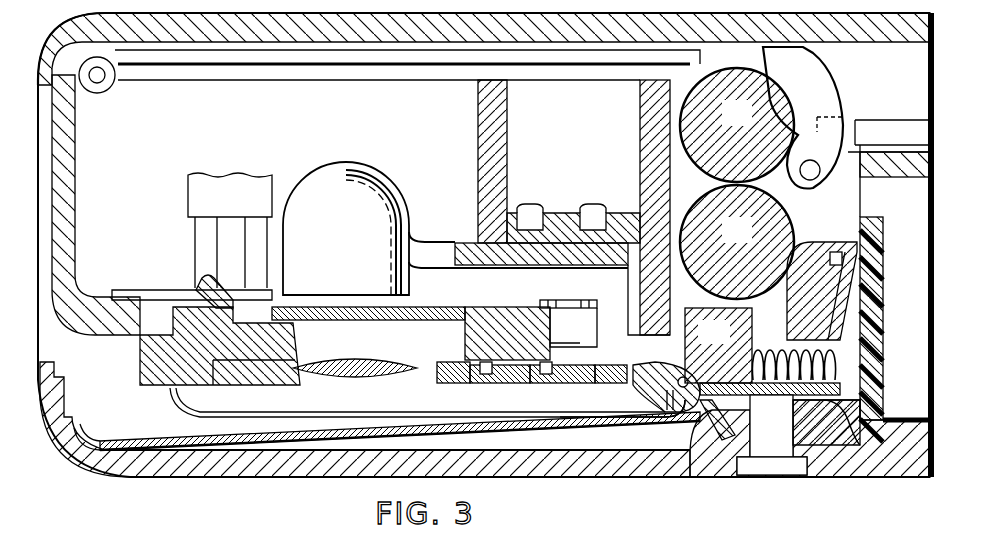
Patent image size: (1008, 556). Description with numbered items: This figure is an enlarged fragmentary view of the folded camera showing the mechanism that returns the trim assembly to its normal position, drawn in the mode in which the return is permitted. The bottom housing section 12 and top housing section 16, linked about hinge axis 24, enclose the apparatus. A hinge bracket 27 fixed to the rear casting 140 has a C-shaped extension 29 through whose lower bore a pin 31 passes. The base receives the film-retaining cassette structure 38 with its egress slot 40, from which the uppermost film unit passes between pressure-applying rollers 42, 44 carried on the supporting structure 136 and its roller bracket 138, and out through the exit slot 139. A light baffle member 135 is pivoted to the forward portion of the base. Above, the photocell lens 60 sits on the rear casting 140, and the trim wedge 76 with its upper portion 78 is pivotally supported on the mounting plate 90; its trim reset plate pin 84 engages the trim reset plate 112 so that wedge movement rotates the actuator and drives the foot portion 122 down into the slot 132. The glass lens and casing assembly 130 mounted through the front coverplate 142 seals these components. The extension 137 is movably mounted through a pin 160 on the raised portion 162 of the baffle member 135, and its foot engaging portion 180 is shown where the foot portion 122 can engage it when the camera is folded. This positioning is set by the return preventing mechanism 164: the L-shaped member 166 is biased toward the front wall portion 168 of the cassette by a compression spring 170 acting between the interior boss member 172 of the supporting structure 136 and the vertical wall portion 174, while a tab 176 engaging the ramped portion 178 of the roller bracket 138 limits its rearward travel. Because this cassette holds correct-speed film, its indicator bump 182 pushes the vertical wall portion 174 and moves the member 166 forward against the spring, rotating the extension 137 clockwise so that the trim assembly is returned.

The bottom housing section 12 is at (875, 467).
The top housing section 16 is at (205, 35).
The hinge axis 24 is at (101, 81).
The hinge bracket 27 is at (383, 58).
The C-shaped extension 29 is at (828, 92).
The pin 31 is at (812, 160).
The film-retaining cassette structure 38 is at (918, 437).
The egress opening or slot 40 is at (870, 190).
The pressure-applying roller 42 is at (725, 126).
The pressure-applying roller 44 is at (725, 243).
The photocell lens 60 is at (335, 180).
The trim wedge 76 is at (503, 320).
The upper portion of trim wedge 78 is at (420, 318).
The trim reset plate pin 84 is at (500, 383).
The mounting plate 90 is at (457, 383).
The trim reset plate 112 is at (563, 383).
The foot portion 122 is at (597, 340).
The glass lens and casing assembly 130 is at (360, 360).
The slot 132 is at (650, 343).
The light baffle member 135 is at (297, 438).
The supporting structure 136 is at (820, 326).
The extension 137 is at (648, 384).
The roller bracket 138 is at (857, 450).
The exit slot 139 is at (139, 467).
The rear casting 140 is at (650, 150).
The front coverplate 142 is at (263, 407).
The pin 160 is at (675, 372).
The raised portion 162 is at (680, 427).
The trim assembly return preventing mechanism 164 is at (776, 448).
The L-shaped member 166 is at (820, 430).
The front wall portion 168 is at (875, 375).
The compression spring 170 is at (875, 392).
The interior boss member 172 is at (727, 342).
The vertical wall portion 174 is at (820, 337).
The tab 176 is at (771, 426).
The ramped portion 178 is at (715, 430).
The foot engaging portion 180 is at (626, 378).
The indicator bump 182 is at (865, 347).